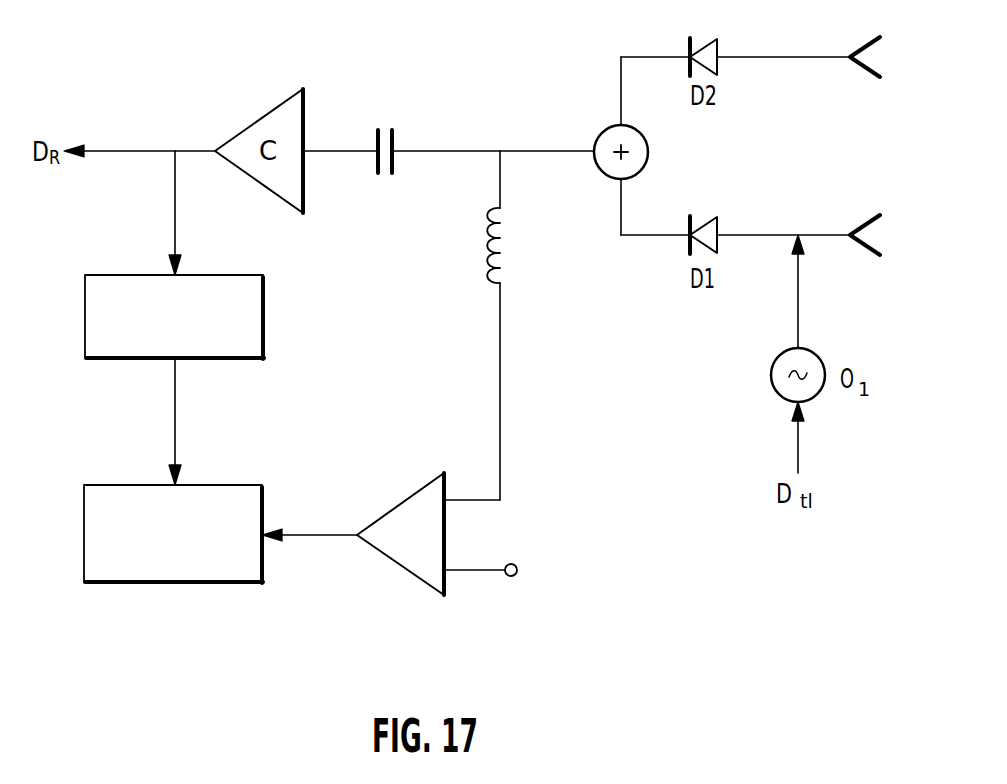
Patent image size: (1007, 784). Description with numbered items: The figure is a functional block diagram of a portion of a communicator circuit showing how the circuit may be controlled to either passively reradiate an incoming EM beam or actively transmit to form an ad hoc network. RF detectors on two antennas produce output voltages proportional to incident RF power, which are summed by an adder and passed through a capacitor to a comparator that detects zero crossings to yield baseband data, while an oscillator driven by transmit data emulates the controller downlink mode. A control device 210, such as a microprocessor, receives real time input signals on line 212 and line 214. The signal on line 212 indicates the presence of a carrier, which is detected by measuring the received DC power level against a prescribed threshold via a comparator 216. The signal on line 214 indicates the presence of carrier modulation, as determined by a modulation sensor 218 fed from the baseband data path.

The control device 210 is at (102, 568).
The line 212 is at (323, 538).
The line 214 is at (220, 421).
The comparator 216 is at (428, 575).
The modulation sensor 218 is at (103, 343).